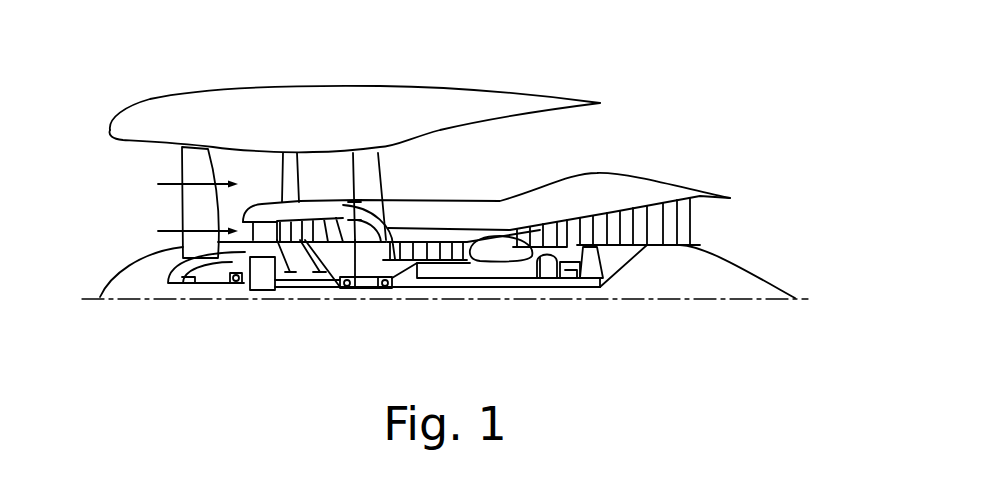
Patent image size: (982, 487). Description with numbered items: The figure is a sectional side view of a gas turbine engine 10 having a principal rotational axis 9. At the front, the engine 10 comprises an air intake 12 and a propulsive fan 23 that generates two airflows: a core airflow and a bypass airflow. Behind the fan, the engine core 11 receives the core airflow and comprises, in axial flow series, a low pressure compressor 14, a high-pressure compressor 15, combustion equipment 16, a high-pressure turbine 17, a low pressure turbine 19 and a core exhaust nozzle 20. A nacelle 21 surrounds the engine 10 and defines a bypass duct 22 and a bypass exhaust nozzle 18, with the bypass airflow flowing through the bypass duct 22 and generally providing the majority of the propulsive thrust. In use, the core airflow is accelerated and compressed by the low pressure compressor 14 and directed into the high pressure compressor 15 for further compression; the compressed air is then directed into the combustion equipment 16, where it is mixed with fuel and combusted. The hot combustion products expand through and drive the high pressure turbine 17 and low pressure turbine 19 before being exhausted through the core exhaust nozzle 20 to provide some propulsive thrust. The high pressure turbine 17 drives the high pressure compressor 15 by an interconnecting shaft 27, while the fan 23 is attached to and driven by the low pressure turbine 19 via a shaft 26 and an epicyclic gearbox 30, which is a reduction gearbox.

The principal rotational axis 9 is at (693, 300).
The gas turbine engine 10 is at (158, 99).
The core 11 is at (508, 214).
The air intake 12 is at (119, 159).
The low pressure compressor 14 is at (318, 227).
The high-pressure compressor 15 is at (437, 250).
The combustion equipment 16 is at (493, 250).
The high-pressure turbine 17 is at (547, 237).
The bypass exhaust nozzle 18 is at (689, 99).
The low pressure turbine 19 is at (657, 233).
The core exhaust nozzle 20 is at (740, 230).
The nacelle 21 is at (365, 98).
The bypass duct 22 is at (553, 140).
The propulsive fan 23 is at (183, 217).
The shaft 26 is at (407, 290).
The interconnecting shaft 27 is at (460, 280).
The epicyclic gearbox 30 is at (262, 283).